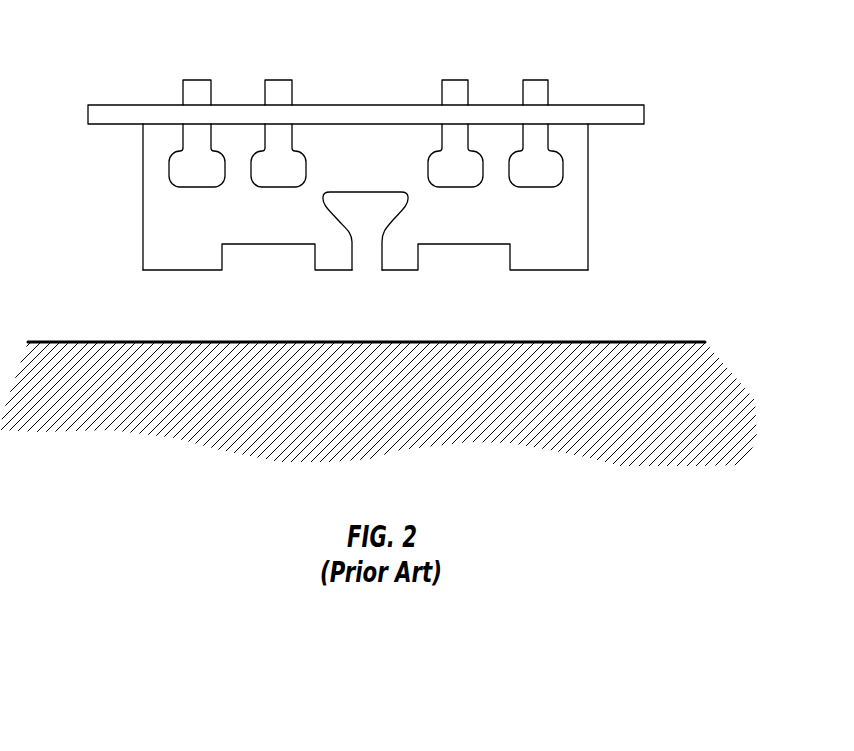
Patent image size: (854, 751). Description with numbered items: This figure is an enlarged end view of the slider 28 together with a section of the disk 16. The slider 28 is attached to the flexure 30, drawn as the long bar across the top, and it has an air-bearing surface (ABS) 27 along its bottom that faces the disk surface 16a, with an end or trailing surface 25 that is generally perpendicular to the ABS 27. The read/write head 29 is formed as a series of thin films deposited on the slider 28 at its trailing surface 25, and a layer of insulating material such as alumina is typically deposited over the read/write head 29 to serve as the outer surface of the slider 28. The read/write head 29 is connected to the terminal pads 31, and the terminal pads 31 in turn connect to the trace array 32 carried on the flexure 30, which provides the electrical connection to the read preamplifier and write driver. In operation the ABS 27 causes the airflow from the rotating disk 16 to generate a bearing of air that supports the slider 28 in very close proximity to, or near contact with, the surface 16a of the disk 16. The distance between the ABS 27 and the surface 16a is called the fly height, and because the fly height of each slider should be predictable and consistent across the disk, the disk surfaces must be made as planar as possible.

The disk 16 is at (708, 374).
The disk surface 16a is at (650, 342).
The trailing surface 25 is at (360, 216).
The air-bearing surface (ABS) 27 is at (163, 272).
The slider 28 is at (590, 181).
The read/write head 29 is at (368, 190).
The flexure 30 is at (645, 109).
The terminal pads 31 is at (268, 188).
The trace array 32 is at (548, 68).